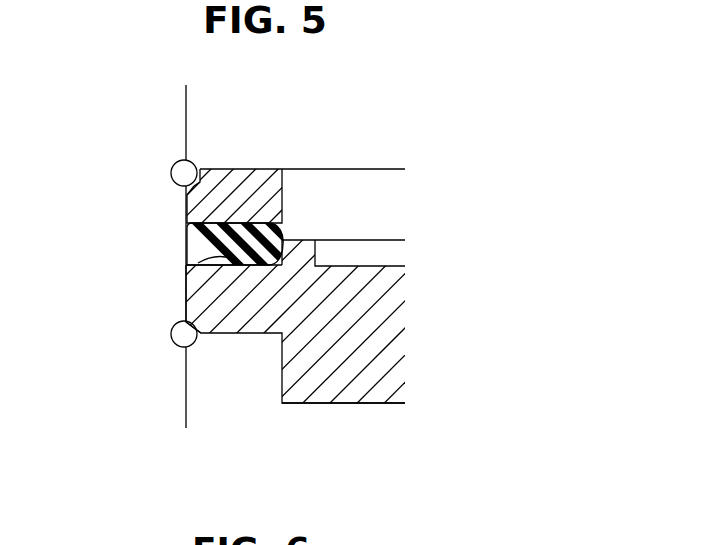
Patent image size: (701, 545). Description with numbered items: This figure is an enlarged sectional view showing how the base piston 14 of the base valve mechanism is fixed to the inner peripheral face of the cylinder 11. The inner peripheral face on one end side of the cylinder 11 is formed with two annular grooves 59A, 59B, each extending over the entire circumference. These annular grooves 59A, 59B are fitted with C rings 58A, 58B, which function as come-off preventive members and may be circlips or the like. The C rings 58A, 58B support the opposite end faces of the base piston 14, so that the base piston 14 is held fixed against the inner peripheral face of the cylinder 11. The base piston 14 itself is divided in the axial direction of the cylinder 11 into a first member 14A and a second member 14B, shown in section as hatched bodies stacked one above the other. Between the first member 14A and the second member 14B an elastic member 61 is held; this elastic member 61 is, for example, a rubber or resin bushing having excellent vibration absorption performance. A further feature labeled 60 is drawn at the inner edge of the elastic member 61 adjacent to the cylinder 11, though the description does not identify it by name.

The cylinder 11 is at (186, 97).
The base piston 14 is at (365, 405).
The first member 14A is at (248, 312).
The second member 14B is at (257, 185).
The C ring 58A is at (193, 346).
The C ring 58B is at (195, 163).
The annular groove 59A is at (171, 335).
The annular groove 59B is at (171, 181).
The seal lip 60 is at (186, 264).
The elastic member 61 is at (187, 243).